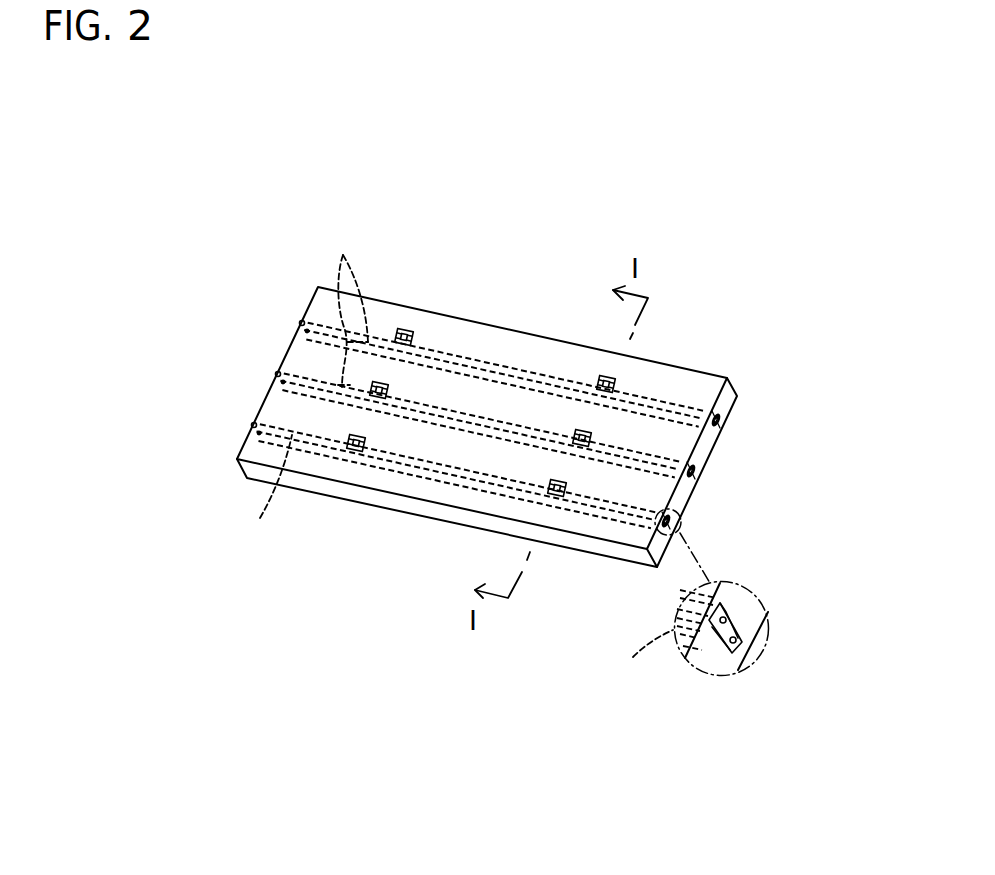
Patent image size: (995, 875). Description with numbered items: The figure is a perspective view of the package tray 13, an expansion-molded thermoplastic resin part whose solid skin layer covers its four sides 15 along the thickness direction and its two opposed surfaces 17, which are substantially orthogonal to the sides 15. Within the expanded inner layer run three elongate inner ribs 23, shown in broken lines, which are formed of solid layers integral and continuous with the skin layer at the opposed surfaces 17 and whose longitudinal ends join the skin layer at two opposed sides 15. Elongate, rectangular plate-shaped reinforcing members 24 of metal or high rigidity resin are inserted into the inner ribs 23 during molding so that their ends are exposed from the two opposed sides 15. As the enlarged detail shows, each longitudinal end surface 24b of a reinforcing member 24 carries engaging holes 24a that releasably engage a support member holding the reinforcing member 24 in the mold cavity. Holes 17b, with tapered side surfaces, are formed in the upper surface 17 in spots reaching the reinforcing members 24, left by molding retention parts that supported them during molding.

The package tray 13 is at (403, 184).
The sides 15 is at (393, 502).
The surfaces 17 is at (498, 342).
The holes 17b is at (381, 385).
The inner ribs 23 is at (455, 459).
The reinforcing members 24 is at (752, 584).
The engaging holes 24a is at (715, 650).
The longitudinal end surfaces 24b is at (745, 636).